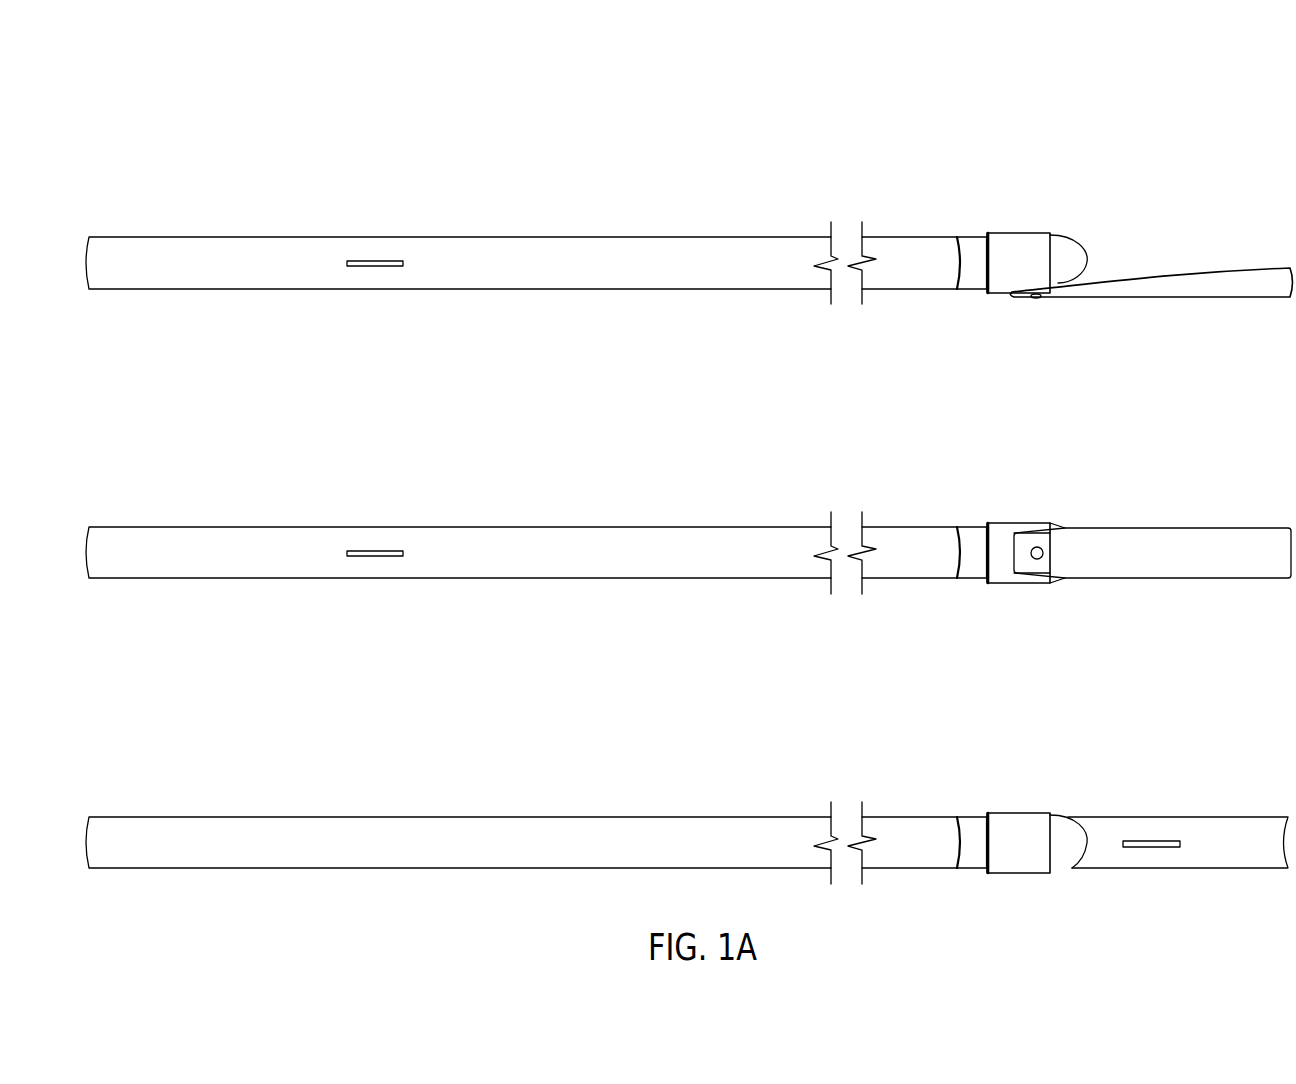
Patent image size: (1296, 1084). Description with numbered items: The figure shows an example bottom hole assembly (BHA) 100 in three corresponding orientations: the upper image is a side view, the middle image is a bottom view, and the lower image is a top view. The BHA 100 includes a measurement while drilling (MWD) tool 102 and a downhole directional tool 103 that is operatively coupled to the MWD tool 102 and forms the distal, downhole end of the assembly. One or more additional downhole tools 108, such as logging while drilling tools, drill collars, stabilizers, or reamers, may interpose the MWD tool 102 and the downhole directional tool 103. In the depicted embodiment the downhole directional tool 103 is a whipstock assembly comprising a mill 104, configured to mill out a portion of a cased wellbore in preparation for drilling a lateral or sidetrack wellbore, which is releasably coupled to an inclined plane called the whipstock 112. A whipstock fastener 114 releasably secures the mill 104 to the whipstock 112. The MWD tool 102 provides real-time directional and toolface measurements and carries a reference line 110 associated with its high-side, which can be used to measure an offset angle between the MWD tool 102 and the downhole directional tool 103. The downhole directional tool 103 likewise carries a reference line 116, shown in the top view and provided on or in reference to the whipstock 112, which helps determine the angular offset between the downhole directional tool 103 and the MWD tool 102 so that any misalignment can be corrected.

The bottom hole assembly 100 is at (143, 70).
The measurement while drilling tool 102 is at (199, 183).
The downhole directional tool 103 is at (1158, 160).
The mill 104 is at (1020, 243).
The additional downhole tool 108 is at (897, 237).
The reference line 110 is at (376, 261).
The whipstock 112 is at (1240, 268).
The whipstock fastener 114 is at (1040, 299).
The reference line 116 is at (1152, 841).